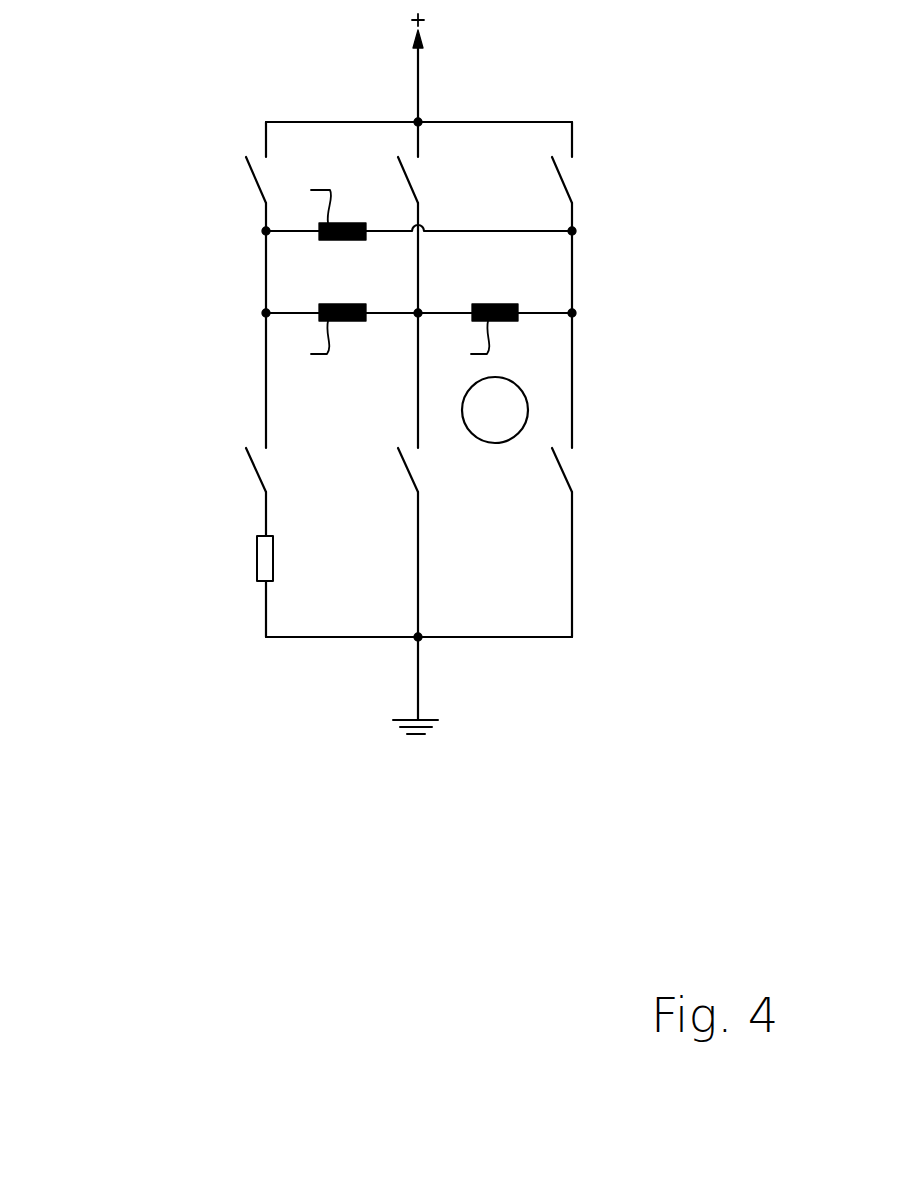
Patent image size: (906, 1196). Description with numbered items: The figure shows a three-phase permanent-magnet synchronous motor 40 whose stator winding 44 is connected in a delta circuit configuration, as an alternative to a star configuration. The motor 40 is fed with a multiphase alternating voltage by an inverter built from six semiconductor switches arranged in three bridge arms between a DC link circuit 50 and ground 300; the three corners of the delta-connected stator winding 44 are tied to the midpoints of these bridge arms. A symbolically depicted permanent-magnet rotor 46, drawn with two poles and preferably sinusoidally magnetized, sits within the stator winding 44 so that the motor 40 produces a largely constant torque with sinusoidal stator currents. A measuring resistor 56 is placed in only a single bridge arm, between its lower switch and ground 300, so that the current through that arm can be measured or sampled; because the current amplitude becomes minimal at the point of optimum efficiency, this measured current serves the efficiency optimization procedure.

The motor 40 is at (200, 152).
The stator winding 44 is at (516, 159).
The permanent-magnet rotor 46 is at (477, 425).
The DC link circuit 50 is at (418, 75).
The measuring resistor 56 is at (267, 562).
The ground 300 is at (418, 677).